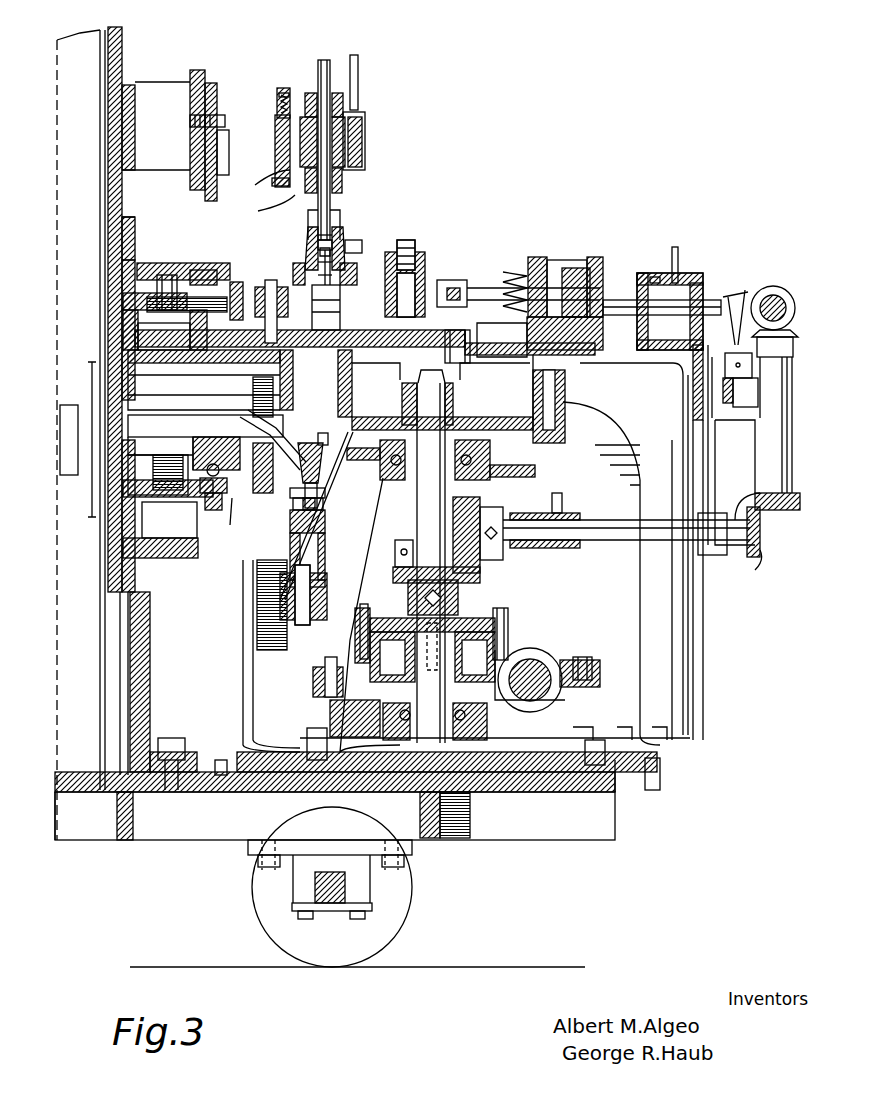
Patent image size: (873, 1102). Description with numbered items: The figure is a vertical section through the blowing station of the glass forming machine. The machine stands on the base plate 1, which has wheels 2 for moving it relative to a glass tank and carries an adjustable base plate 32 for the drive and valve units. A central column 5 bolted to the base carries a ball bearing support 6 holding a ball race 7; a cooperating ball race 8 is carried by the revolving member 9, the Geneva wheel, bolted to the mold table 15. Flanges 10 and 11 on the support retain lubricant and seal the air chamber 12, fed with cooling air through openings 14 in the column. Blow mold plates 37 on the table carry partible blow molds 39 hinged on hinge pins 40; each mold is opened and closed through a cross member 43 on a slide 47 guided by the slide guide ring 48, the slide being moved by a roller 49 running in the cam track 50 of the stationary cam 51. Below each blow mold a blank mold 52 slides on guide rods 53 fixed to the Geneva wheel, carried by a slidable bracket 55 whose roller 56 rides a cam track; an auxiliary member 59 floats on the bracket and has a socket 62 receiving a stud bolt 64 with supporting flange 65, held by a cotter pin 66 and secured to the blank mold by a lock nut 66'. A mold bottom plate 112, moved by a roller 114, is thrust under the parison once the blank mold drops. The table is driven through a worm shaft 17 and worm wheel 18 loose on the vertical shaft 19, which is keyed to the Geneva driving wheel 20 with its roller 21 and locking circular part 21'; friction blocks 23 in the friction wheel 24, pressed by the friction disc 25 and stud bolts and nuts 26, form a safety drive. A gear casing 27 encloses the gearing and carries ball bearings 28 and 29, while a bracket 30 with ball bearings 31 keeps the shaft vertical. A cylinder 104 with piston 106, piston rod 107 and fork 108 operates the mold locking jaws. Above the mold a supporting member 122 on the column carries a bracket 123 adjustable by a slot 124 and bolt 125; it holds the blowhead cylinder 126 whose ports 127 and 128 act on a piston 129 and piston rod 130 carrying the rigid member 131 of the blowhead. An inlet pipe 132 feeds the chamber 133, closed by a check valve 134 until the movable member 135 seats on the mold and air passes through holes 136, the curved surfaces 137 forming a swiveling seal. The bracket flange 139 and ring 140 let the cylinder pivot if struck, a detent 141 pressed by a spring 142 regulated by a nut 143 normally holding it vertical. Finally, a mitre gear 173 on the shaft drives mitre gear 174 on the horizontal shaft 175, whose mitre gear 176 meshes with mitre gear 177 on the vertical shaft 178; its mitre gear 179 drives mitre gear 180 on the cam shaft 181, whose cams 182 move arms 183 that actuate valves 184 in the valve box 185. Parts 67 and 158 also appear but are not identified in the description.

The base plate 1 is at (620, 797).
The wheels 2 is at (413, 887).
The central column 5 is at (124, 40).
The ball bearing support 6 is at (186, 505).
The ball race 7 is at (232, 522).
The ball race 8 is at (207, 460).
The revolving member 9 is at (265, 430).
The flange 10 is at (185, 475).
The flange 11 is at (238, 482).
The air chamber 12 is at (205, 423).
The openings 14 is at (125, 430).
The mold table 15 is at (270, 348).
The worm shaft 17 is at (562, 658).
The worm wheel 18 is at (520, 700).
The vertical shaft 19 is at (425, 515).
The Geneva driving wheel 20 is at (527, 440).
The roller 21 is at (573, 406).
The circular part 21' is at (434, 387).
The friction blocks 23 is at (512, 632).
The friction wheel 24 is at (505, 648).
The friction disc 25 is at (358, 630).
The stud bolts and nuts 26 is at (533, 612).
The gear casing 27 is at (583, 705).
The ball bearing 28 is at (500, 790).
The ball bearing 29 is at (460, 800).
The bracket 30 is at (372, 577).
The ball bearings 31 is at (375, 455).
The adjustable base plate 32 is at (660, 750).
The blow mold plates 37 is at (240, 348).
The blow molds 39 is at (345, 285).
The hinge pins 40 is at (268, 290).
The cross member 43 is at (237, 285).
The slide 47 is at (170, 278).
The slide guide ring 48 is at (165, 321).
The roller 49 is at (220, 282).
The cam track 50 is at (200, 270).
The stationary cam 51 is at (145, 275).
The blank molds 52 is at (305, 450).
The guide rods 53 is at (318, 450).
The slidable bracket 55 is at (356, 612).
The roller 56 is at (305, 600).
The auxiliary member 59 is at (322, 550).
The socket 62 is at (293, 515).
The stud bolt 64 is at (318, 502).
The supporting flange 65 is at (300, 487).
The cotter pin 66 is at (325, 525).
The lock nut 66' is at (269, 468).
The nut 67 is at (328, 655).
The cylinder 104 is at (566, 270).
The piston 106 is at (545, 275).
The piston rod 107 is at (490, 295).
The fork 108 is at (410, 270).
The mold bottom plate 112 is at (340, 307).
The roller 114 is at (470, 362).
The supporting member 122 is at (198, 70).
The bracket 123 is at (280, 115).
The slot 124 is at (210, 160).
The bolt 125 is at (212, 122).
The cylinder 126 is at (340, 168).
The port 127 is at (320, 62).
The port 128 is at (357, 108).
The piston 129 is at (364, 145).
The piston rod 130 is at (322, 212).
The rigid member 131 is at (335, 235).
The inlet pipe 132 is at (348, 253).
The chamber 133 is at (306, 240).
The check valve 134 is at (306, 252).
The movable member 135 is at (306, 276).
The holes 136 is at (306, 265).
The curved surfaces 137 is at (340, 270).
The flange 139 is at (292, 205).
The ring 140 is at (287, 186).
The detent 141 is at (282, 100).
The spring 142 is at (288, 110).
The nut 143 is at (285, 88).
The link 158 is at (280, 178).
The mitre gear 173 is at (470, 566).
The mitre gear 174 is at (485, 507).
The horizontal shaft 175 is at (590, 530).
The mitre gear 176 is at (765, 558).
The mitre gear 177 is at (770, 533).
The vertical shaft 178 is at (794, 357).
The mitre gear 179 is at (795, 334).
The mitre gear 180 is at (768, 300).
The horizontal cam shaft 181 is at (780, 305).
The cams 182 is at (740, 305).
The pivotally mounted arms 183 is at (727, 320).
The valves 184 is at (660, 298).
The valve box 185 is at (700, 290).